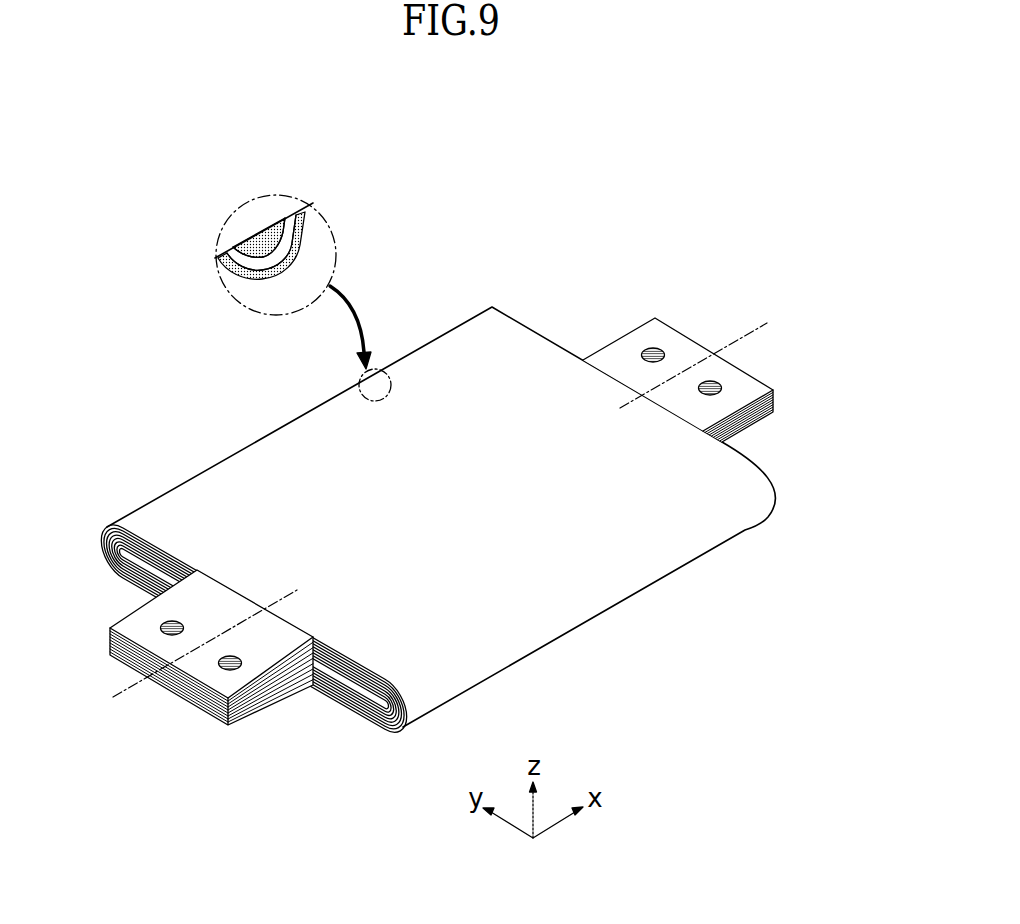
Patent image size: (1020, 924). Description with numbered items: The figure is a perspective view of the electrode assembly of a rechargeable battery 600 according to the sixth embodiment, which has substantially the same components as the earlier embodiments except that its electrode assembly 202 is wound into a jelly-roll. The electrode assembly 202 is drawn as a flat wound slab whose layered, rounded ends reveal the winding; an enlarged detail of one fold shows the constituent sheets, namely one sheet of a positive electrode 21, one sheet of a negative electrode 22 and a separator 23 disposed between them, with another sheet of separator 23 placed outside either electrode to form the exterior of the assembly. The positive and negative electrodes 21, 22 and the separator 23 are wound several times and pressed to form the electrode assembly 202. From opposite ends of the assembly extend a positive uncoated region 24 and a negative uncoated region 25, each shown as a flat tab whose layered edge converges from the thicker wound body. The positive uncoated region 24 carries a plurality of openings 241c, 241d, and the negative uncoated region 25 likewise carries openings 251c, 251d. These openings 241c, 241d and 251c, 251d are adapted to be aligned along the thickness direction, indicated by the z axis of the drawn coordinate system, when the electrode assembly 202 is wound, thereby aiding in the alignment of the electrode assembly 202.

The rechargeable battery 600 is at (432, 97).
The electrode assembly 202 is at (606, 621).
The positive electrode 21 is at (262, 232).
The negative electrode 22 is at (293, 217).
The separator 23 is at (226, 276).
The positive uncoated region 24 is at (192, 683).
The opening 241c is at (161, 628).
The opening 241d is at (240, 668).
The negative uncoated region 25 is at (699, 359).
The opening 251c is at (646, 348).
The opening 251d is at (757, 420).